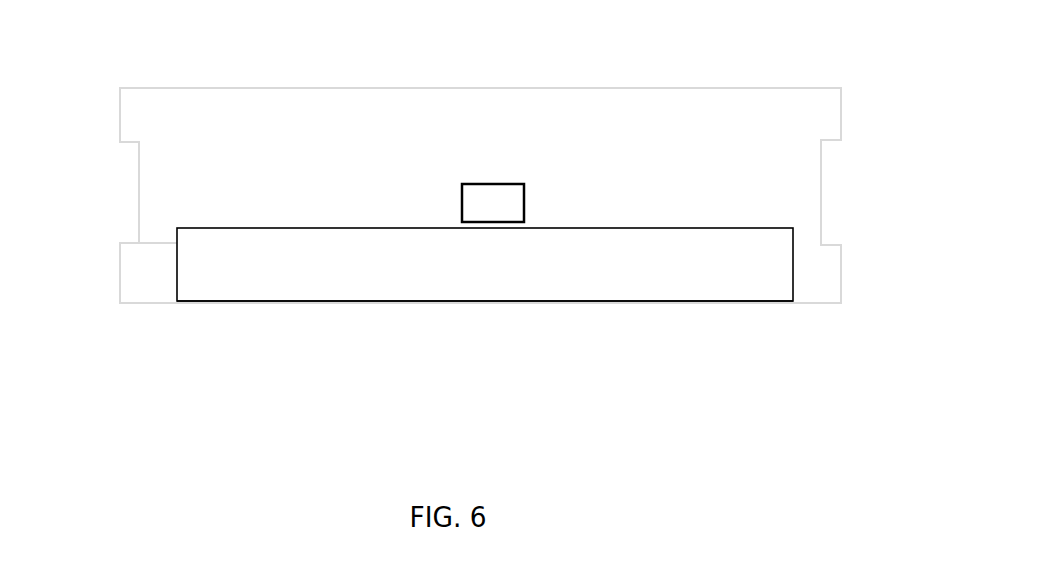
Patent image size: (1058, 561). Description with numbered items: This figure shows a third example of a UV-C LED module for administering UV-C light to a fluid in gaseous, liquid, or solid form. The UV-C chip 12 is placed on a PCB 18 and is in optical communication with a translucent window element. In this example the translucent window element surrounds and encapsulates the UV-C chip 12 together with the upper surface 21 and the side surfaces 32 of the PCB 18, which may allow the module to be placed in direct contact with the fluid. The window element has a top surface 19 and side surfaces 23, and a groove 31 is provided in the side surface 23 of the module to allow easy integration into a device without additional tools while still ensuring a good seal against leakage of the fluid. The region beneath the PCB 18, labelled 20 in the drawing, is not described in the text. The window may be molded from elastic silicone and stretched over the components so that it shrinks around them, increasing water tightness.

The top surface 19 is at (667, 90).
The upper surface 21 is at (190, 222).
The side surfaces 32 is at (172, 263).
The groove 31 is at (830, 192).
The side surface 23 is at (848, 273).
The PCB 18 is at (668, 275).
The bottom surface of plate 20 is at (282, 302).
The UV-C chip 12 is at (497, 208).